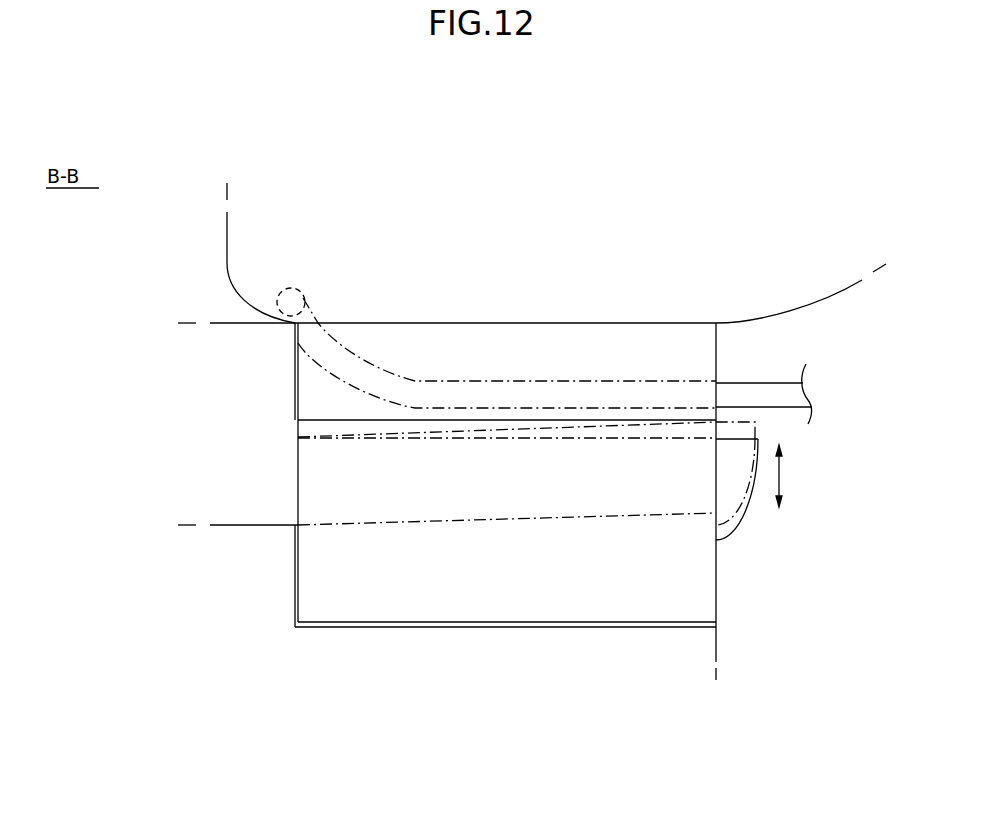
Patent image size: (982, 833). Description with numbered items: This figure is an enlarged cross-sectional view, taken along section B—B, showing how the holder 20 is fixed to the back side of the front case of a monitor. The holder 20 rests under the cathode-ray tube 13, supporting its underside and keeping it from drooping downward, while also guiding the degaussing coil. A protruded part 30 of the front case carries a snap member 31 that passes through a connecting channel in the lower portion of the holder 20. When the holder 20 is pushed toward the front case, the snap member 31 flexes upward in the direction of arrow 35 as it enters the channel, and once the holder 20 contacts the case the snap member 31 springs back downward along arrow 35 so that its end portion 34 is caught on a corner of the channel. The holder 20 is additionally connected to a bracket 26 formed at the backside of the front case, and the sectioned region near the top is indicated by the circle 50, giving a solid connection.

The cathode-ray tube 13 is at (822, 286).
The holder 20 is at (679, 287).
The bracket 26 is at (606, 628).
The protruded part 30 is at (250, 398).
The snap member 31 is at (723, 500).
The end portion 34 is at (720, 534).
The arrow 35 is at (781, 476).
The hinge 50 is at (307, 307).